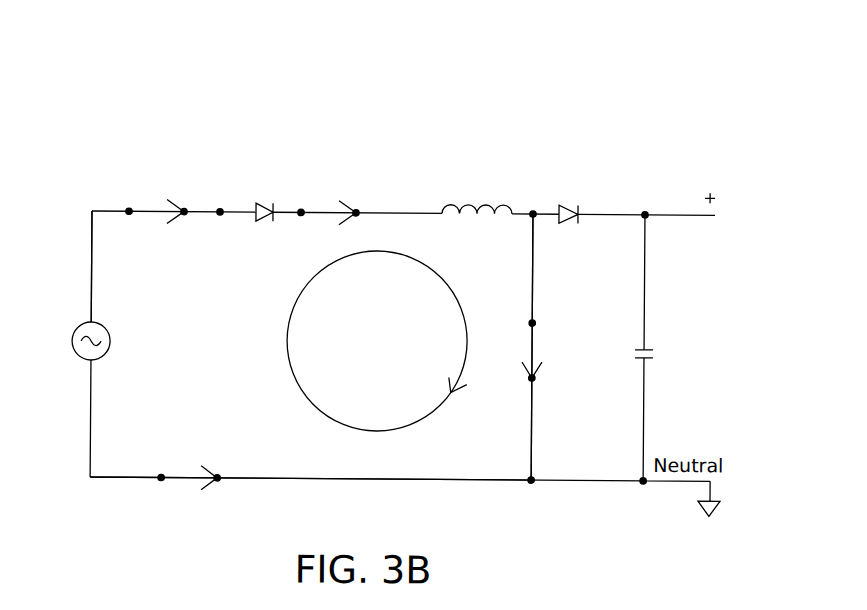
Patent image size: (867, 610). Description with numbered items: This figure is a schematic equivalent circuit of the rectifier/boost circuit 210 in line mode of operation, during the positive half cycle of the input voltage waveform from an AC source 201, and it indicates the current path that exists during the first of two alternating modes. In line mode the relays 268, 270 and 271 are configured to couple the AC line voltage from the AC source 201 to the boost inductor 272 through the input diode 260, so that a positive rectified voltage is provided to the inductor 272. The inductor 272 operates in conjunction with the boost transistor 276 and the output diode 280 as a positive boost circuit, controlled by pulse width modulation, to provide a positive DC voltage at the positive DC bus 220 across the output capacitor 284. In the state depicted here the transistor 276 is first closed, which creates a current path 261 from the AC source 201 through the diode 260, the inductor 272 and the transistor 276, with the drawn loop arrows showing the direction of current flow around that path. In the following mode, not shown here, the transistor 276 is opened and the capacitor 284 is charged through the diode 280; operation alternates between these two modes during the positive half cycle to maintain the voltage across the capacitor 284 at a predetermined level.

The AC source 201 is at (77, 328).
The rectifier/boost circuit 210 is at (627, 122).
The positive DC bus 220 is at (670, 210).
The input diode 260 is at (268, 201).
The current path 261 is at (296, 298).
The relay 268 is at (150, 210).
The relay 270 is at (187, 478).
The relay 271 is at (322, 210).
The inductor 272 is at (468, 205).
The boost transistor 276 is at (534, 349).
The output diode 280 is at (572, 202).
The output capacitor 284 is at (648, 355).